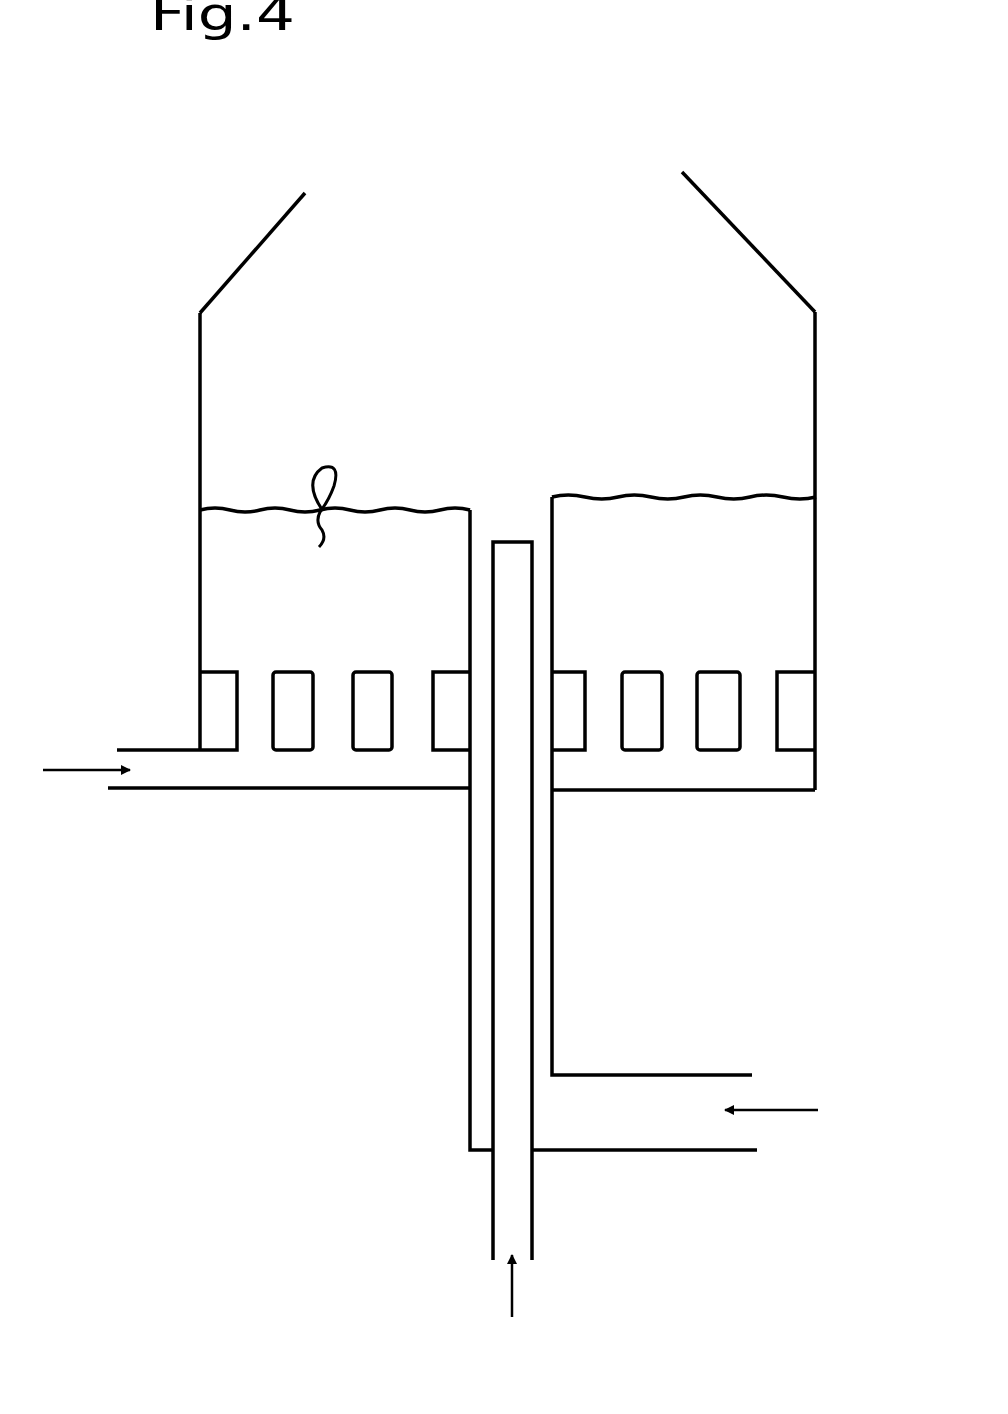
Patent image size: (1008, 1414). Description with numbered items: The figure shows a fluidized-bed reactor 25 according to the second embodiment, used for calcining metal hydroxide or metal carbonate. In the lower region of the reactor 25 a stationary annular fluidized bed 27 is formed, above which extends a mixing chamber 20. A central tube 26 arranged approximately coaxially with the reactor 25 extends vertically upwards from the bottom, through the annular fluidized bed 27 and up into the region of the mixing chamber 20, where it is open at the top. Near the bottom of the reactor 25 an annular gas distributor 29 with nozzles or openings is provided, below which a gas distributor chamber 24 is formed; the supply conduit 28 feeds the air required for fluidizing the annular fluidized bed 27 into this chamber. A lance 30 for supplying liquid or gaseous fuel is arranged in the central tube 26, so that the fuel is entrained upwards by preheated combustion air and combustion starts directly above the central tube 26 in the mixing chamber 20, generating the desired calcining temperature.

The mixing chamber 20 is at (662, 361).
The gas distributor chamber 24 is at (795, 768).
The reactor 25 is at (818, 366).
The central tube 26 is at (470, 912).
The annular fluidized bed 27 is at (343, 607).
The supply conduit 28 is at (132, 790).
The gas distributor 29 is at (797, 712).
The lance 30 is at (534, 857).